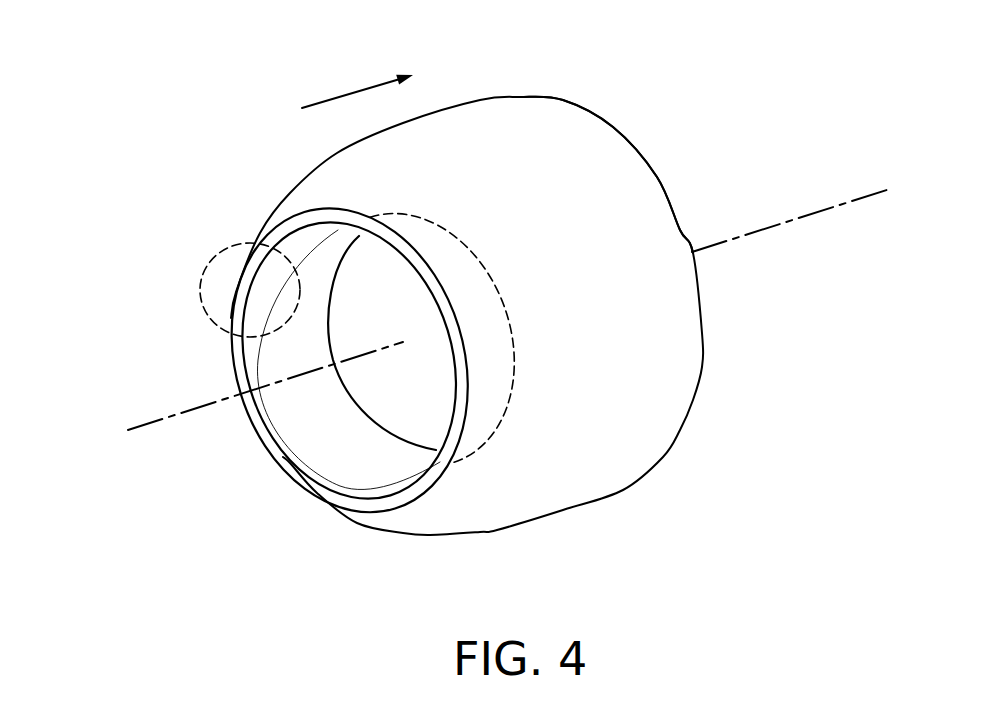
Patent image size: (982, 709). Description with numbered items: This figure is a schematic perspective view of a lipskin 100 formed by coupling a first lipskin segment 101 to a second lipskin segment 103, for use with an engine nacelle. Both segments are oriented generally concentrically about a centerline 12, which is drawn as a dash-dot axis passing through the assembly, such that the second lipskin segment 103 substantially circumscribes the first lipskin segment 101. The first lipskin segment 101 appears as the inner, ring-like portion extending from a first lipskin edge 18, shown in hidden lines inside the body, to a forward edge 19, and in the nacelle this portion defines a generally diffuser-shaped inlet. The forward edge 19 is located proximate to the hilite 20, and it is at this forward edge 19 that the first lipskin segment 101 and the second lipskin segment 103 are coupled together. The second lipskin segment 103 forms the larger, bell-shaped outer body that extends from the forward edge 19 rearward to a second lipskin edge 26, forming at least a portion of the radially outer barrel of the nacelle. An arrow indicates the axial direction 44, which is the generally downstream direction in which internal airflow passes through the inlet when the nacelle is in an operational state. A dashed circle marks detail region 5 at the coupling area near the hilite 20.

The detail region 5 is at (203, 272).
The centerline 12 is at (173, 413).
The first lipskin edge 18 is at (498, 425).
The forward edge 19 is at (280, 242).
The hilite 20 is at (297, 213).
The second lipskin edge 26 is at (657, 177).
The axial direction 44 is at (323, 102).
The lipskin 100 is at (502, 93).
The first lipskin segment 101 is at (455, 472).
The second lipskin segment 103 is at (612, 105).